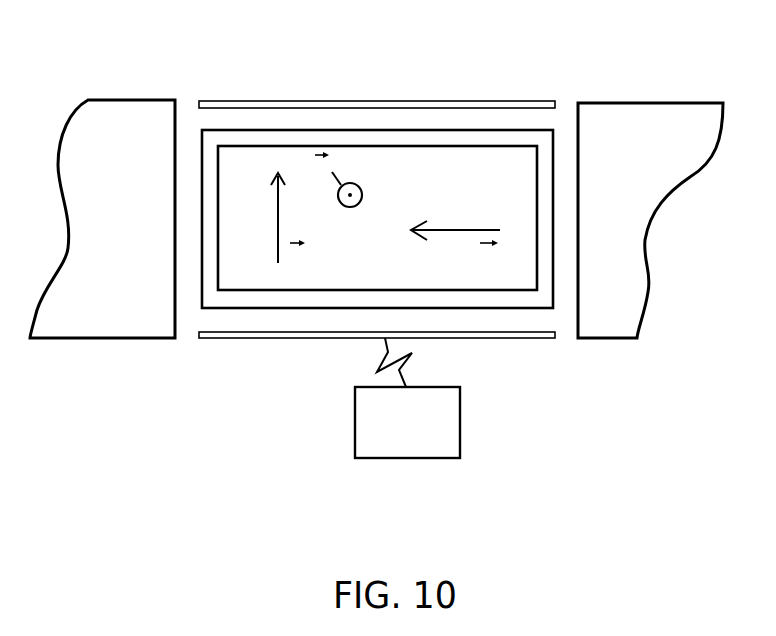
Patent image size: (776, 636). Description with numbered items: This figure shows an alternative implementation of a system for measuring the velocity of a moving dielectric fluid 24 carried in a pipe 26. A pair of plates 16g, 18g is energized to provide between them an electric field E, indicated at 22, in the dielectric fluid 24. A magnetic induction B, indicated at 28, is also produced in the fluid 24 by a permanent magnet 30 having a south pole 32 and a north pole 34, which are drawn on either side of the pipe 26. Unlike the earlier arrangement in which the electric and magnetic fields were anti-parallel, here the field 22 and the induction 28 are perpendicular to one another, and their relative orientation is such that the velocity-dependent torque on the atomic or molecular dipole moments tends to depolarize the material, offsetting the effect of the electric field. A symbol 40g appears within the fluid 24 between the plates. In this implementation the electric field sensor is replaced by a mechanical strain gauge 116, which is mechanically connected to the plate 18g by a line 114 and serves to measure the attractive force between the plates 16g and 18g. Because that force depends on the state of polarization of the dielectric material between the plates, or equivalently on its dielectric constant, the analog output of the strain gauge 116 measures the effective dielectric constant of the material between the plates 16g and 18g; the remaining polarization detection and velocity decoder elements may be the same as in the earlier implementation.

The permanent magnet 30 is at (133, 96).
The south pole 32 is at (139, 175).
The north pole 34 is at (654, 174).
The plate 16g is at (252, 100).
The plate 18g is at (272, 338).
The pipe 26 is at (387, 148).
The dielectric fluid 24 is at (431, 270).
The electric field 22 is at (277, 246).
The magnetic induction 28 is at (467, 229).
The conductor 40g is at (350, 207).
The line 114 is at (413, 354).
The strain gauge 116 is at (400, 458).